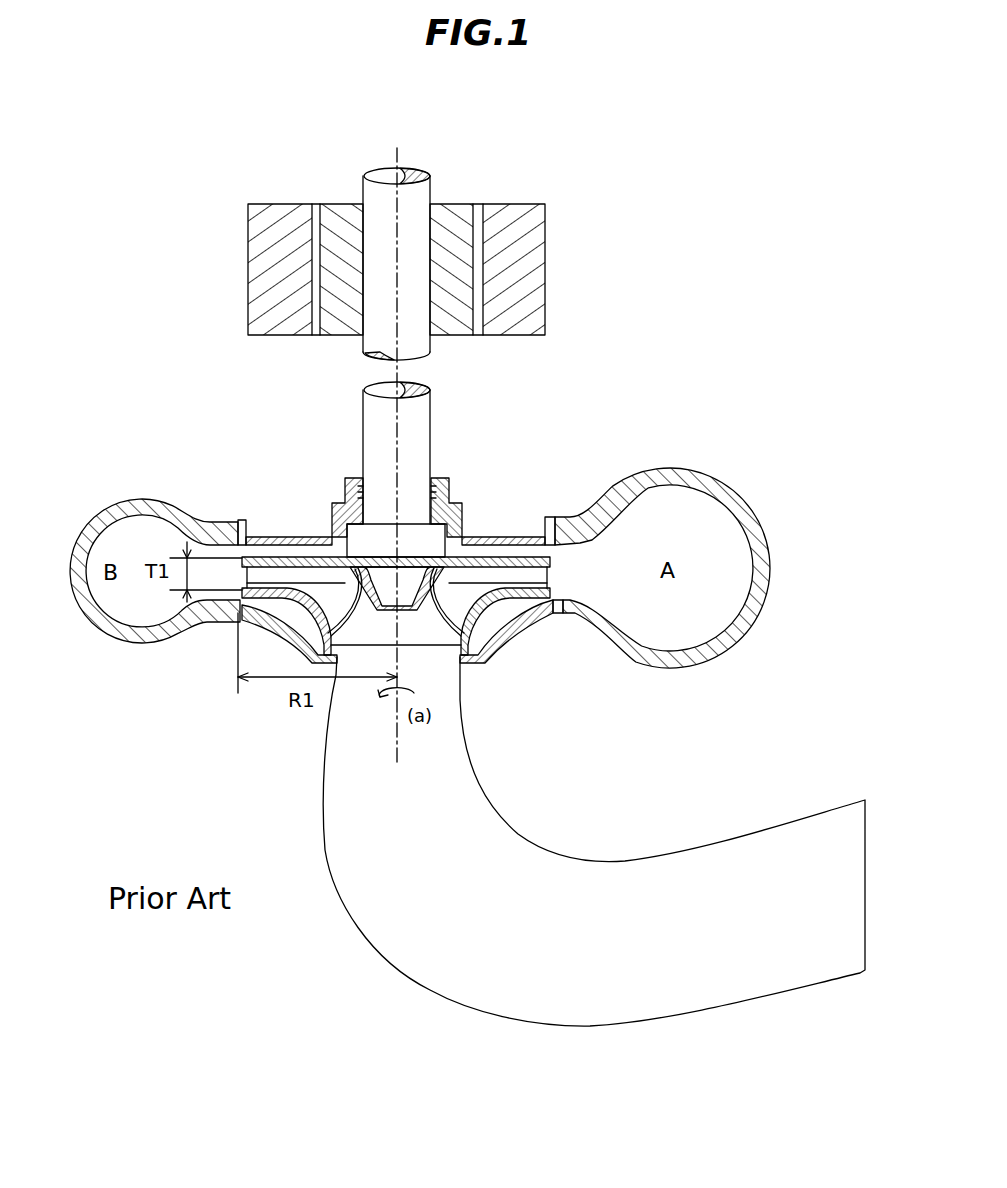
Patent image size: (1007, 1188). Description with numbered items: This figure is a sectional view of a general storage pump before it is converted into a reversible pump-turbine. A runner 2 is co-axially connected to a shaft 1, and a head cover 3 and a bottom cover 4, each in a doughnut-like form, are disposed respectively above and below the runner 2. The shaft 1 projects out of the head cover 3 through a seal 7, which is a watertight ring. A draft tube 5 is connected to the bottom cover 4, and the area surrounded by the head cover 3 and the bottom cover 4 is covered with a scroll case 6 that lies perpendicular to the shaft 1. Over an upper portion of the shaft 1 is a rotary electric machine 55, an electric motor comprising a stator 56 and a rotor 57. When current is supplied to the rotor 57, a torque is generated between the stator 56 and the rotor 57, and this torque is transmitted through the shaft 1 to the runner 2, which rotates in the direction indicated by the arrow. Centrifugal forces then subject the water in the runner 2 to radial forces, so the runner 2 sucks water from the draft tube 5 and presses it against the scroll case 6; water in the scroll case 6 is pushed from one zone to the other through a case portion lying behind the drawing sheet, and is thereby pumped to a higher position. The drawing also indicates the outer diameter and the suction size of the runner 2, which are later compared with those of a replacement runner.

The shaft 1 is at (420, 403).
The runner 2 is at (530, 543).
The head cover 3 is at (483, 533).
The bottom cover 4 is at (517, 627).
The draft tube 5 is at (593, 860).
The scroll case 6 is at (673, 468).
The seal 7 is at (442, 480).
The rotary electric machine 55 is at (430, 249).
The stator 56 is at (540, 227).
The rotor 57 is at (450, 203).